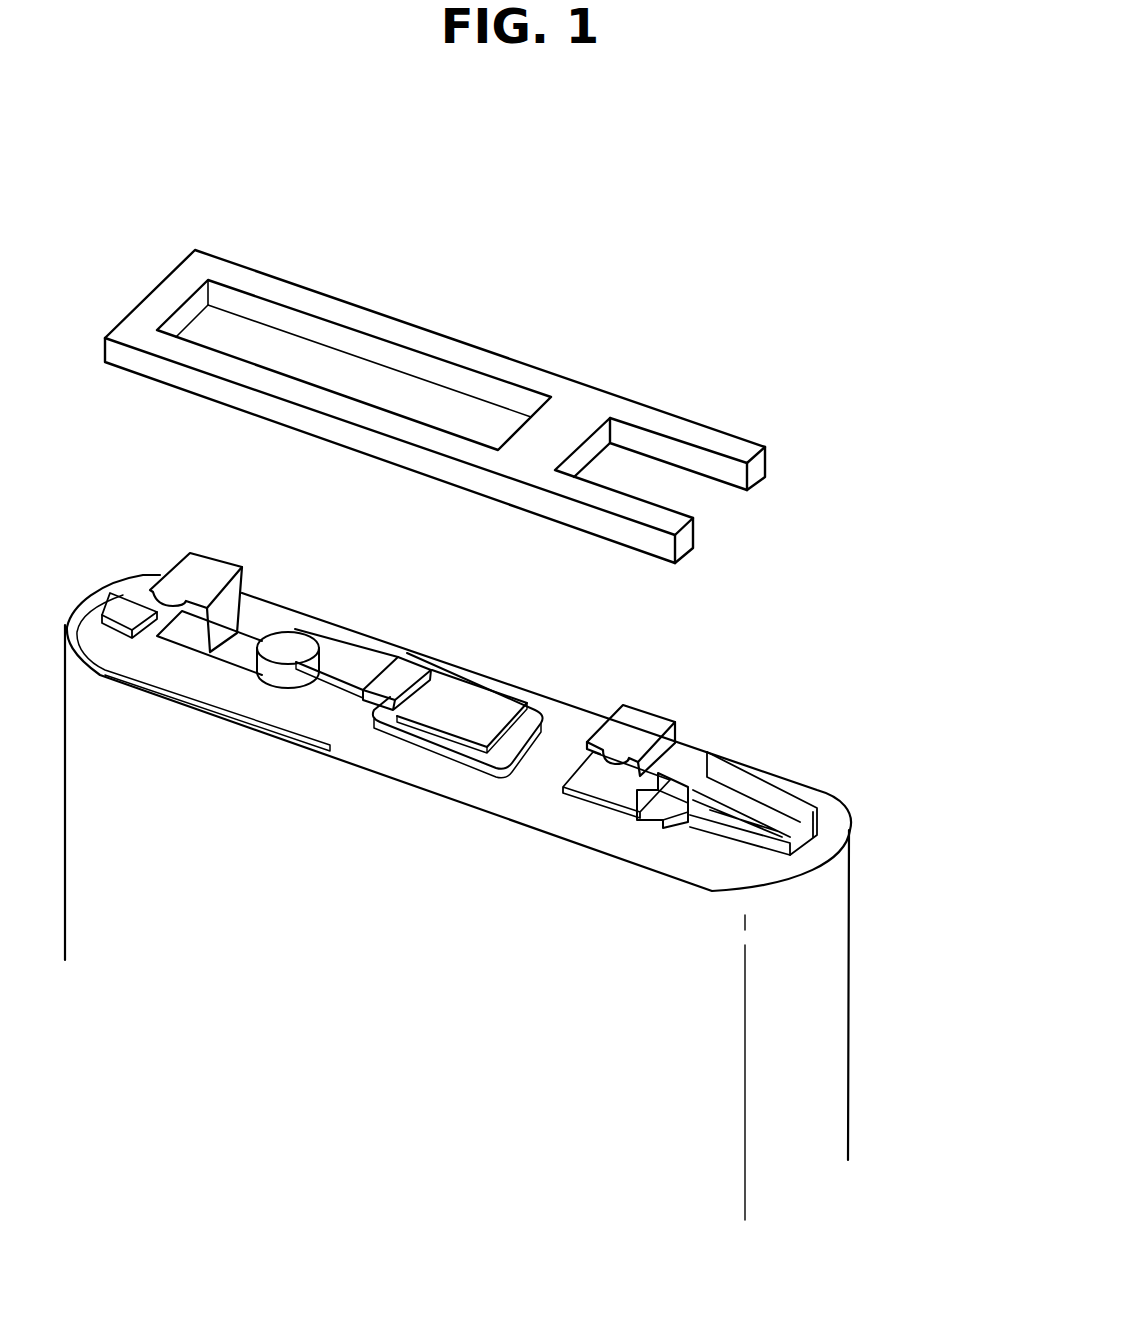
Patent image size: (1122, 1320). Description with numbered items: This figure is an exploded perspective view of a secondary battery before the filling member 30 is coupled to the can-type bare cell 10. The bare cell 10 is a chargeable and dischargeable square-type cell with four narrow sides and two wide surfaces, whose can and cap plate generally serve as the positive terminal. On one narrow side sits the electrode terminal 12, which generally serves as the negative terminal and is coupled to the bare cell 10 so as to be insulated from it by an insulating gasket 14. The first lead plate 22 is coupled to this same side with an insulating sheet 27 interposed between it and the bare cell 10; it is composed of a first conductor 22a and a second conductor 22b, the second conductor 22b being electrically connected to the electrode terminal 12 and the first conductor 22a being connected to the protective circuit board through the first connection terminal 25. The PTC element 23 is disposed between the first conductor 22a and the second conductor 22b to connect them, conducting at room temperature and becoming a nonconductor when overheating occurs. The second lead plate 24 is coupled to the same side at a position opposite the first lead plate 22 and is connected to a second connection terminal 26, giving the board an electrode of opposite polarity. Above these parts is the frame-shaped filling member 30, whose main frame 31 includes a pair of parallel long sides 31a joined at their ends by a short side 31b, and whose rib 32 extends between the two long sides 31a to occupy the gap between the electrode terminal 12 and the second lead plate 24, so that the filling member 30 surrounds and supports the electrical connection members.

The bare cell 10 is at (830, 975).
The electrode terminal 12 is at (410, 745).
The insulating gasket 14 is at (530, 713).
The first lead plate 22 is at (118, 800).
The first conductor 22a is at (192, 632).
The second conductor 22b is at (437, 713).
The PTC element 23 is at (284, 645).
The second lead plate 24 is at (703, 822).
The first connection terminal 25 is at (198, 580).
The second connection terminal 26 is at (638, 725).
The insulating sheet 27 is at (370, 648).
The filling member 30 is at (783, 399).
The main frame 31 is at (330, 166).
The long sides 31a is at (328, 302).
The short side 31b is at (175, 292).
The rib 32 is at (556, 428).